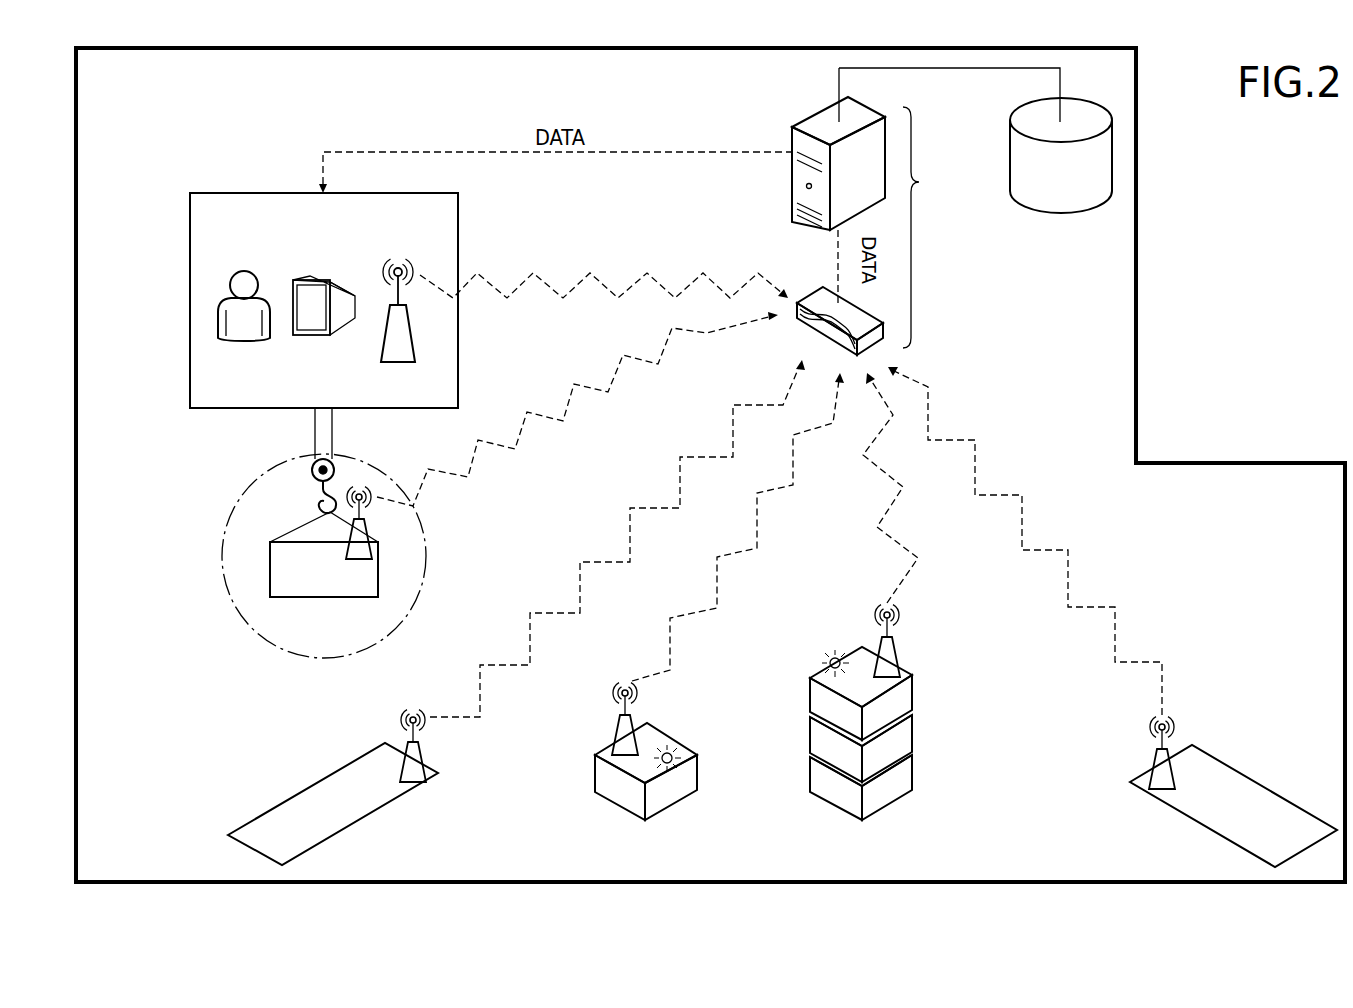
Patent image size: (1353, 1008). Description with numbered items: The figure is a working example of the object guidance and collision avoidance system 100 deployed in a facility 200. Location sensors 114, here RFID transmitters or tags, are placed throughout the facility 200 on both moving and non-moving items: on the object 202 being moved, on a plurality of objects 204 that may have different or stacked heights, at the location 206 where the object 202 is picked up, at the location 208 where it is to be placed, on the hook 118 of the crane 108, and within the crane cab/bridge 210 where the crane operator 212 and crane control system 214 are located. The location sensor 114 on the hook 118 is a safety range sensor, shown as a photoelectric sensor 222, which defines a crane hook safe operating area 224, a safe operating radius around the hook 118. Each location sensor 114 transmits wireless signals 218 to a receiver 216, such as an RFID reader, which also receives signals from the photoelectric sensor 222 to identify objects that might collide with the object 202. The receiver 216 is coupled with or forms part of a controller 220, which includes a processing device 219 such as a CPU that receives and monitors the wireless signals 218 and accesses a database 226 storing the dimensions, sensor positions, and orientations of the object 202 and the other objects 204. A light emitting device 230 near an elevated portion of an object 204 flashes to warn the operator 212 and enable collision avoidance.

The object guidance and collision avoidance system 100 is at (158, 144).
The crane 108 is at (162, 306).
The location sensor 114 is at (416, 345).
The hook 118 is at (318, 503).
The facility 200 is at (1138, 316).
The object 202 is at (341, 584).
The objects 204 is at (596, 776).
The location where the object is picked up 206 is at (292, 795).
The location where the object is to be moved to or placed 208 is at (1262, 782).
The crane cab/bridge 210 is at (445, 224).
The crane operator 212 is at (245, 341).
The crane control system 214 is at (318, 337).
The receiver 216 is at (816, 290).
The wireless signals 218 is at (523, 284).
The processing device 219 is at (874, 185).
The controller 220 is at (931, 227).
The photoelectric sensor 222 is at (312, 472).
The crane hook safe operating area 224 is at (245, 627).
The database 226 is at (1078, 203).
The light emitting device 230 is at (671, 766).